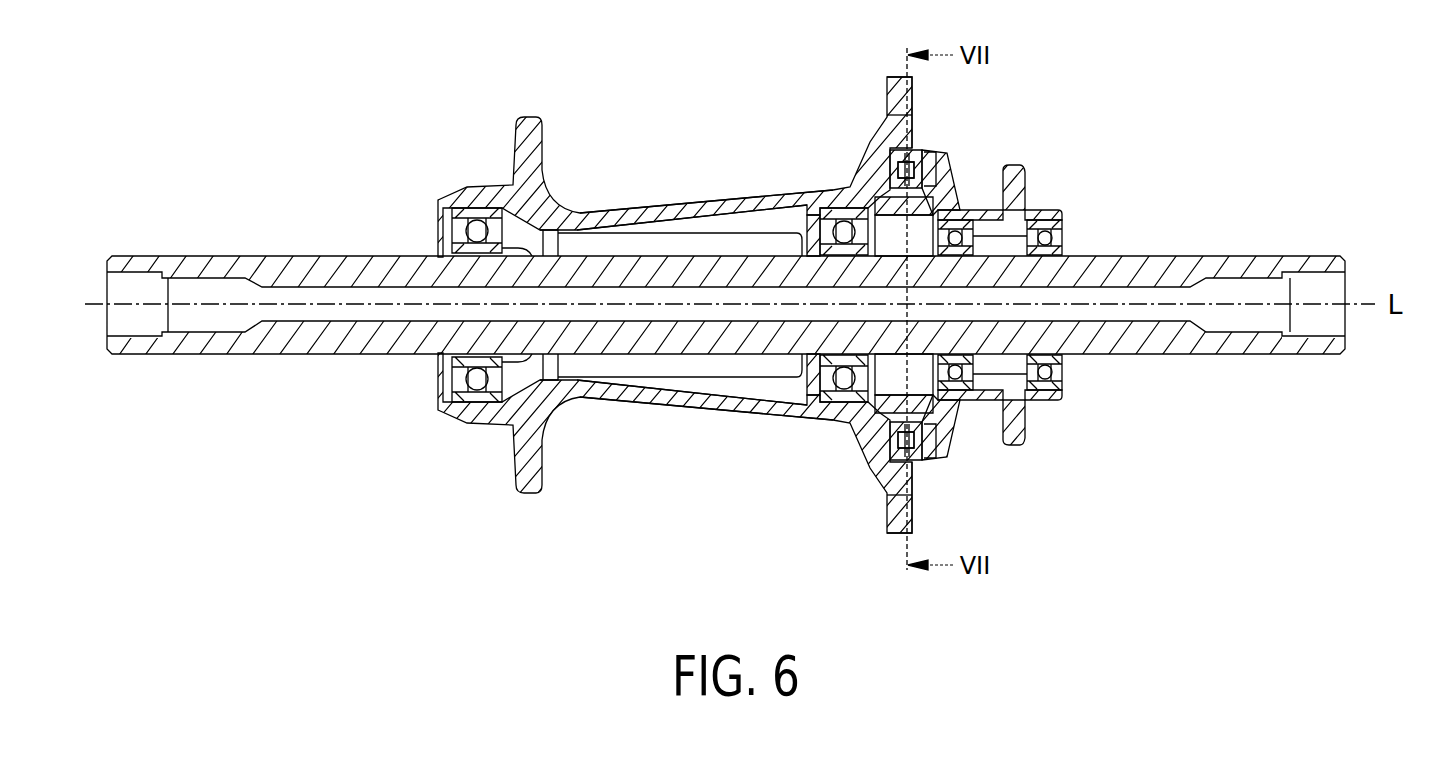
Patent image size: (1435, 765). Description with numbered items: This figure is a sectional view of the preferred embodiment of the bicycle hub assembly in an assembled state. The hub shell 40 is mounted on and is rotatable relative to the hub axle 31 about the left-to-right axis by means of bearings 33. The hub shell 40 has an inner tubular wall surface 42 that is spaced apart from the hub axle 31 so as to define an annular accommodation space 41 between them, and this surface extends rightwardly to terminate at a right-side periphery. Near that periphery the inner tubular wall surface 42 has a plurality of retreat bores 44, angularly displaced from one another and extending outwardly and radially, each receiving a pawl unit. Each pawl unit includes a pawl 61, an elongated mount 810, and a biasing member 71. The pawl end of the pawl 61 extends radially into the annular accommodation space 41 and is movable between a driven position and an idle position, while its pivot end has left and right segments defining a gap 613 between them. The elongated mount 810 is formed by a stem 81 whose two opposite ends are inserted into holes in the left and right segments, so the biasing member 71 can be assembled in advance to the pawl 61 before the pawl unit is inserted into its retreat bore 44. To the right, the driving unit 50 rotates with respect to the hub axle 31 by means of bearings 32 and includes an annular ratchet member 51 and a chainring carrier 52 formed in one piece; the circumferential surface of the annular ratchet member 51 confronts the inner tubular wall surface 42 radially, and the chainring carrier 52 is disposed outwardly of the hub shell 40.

The hub axle 31 is at (268, 350).
The bearings 32 is at (1040, 407).
The bearings 33 is at (458, 400).
The hub shell 40 is at (592, 207).
The annular accommodation space 41 is at (672, 228).
The inner tubular wall surface 42 is at (745, 212).
The retreat bores 44 is at (908, 150).
The driving unit 50 is at (1067, 205).
The annular ratchet member 51 is at (913, 205).
The chainring carrier 52 is at (1025, 175).
The pawl 61 is at (889, 177).
The biasing member 71 is at (887, 475).
The stem 81 is at (895, 462).
The elongated mount 810 is at (930, 155).
The gap 613 is at (928, 467).